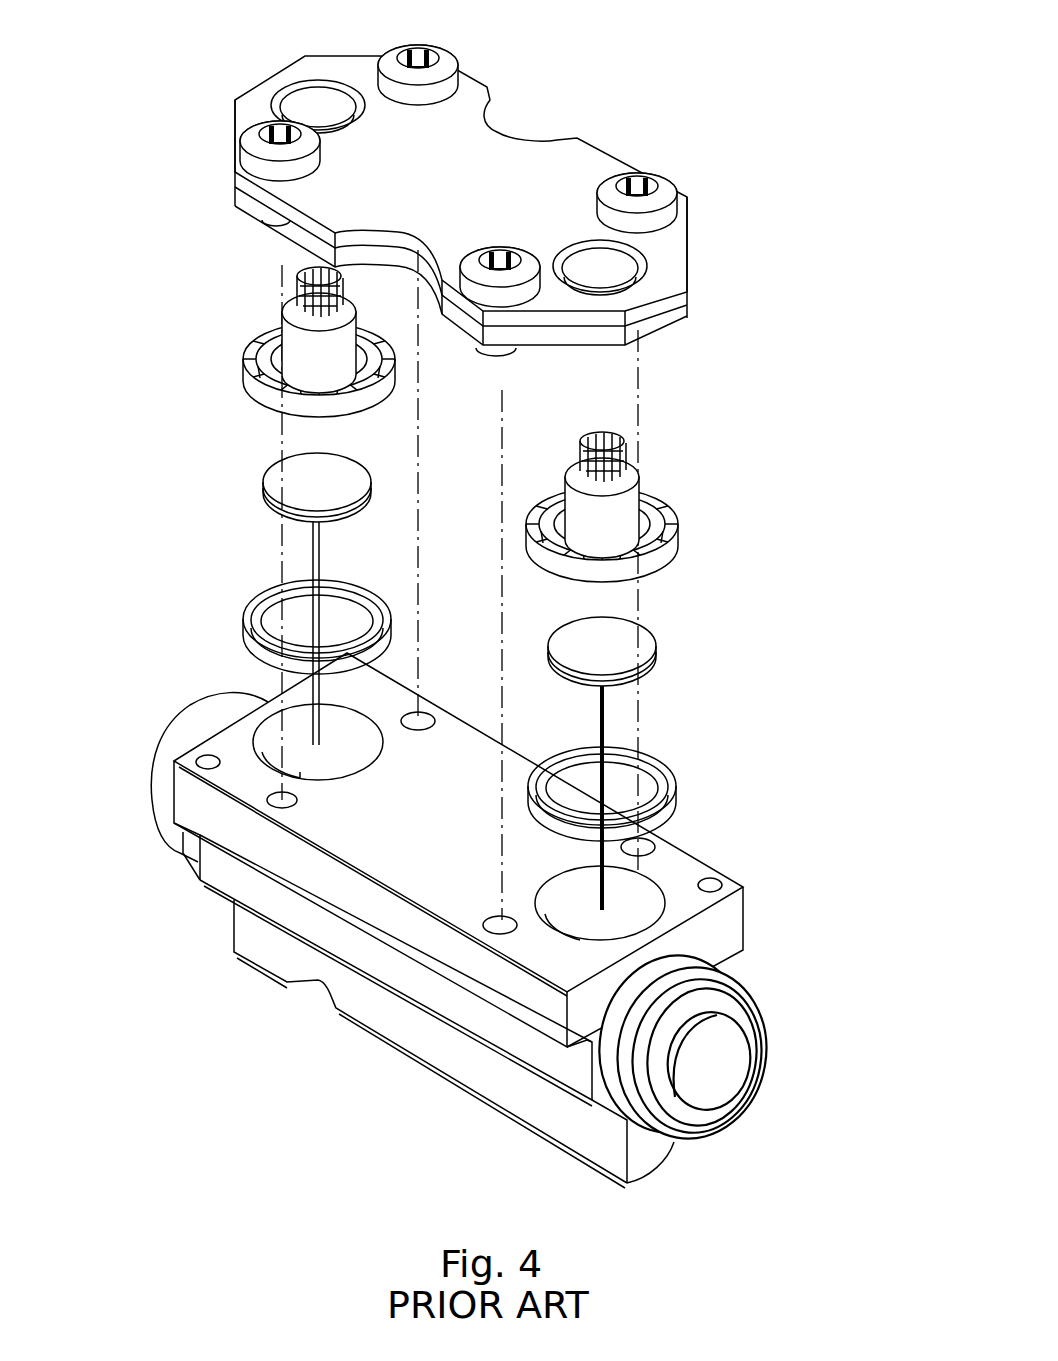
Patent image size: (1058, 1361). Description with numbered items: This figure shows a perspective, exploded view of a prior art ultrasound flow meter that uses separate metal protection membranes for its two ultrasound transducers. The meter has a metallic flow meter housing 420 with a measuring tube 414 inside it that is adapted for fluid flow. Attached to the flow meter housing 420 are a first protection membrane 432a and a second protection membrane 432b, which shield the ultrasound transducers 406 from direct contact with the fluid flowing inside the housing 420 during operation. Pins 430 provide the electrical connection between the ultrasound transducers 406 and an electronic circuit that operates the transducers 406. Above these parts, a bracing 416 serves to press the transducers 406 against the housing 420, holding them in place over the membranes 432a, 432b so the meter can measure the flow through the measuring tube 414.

The bracing 416 is at (560, 163).
The pins 430 is at (317, 291).
The ultrasound transducers 406 is at (597, 652).
The first protection membrane 432a is at (337, 628).
The second protection membrane 432b is at (632, 787).
The flow meter housing 420 is at (397, 1010).
The measuring tube 414 is at (755, 1093).